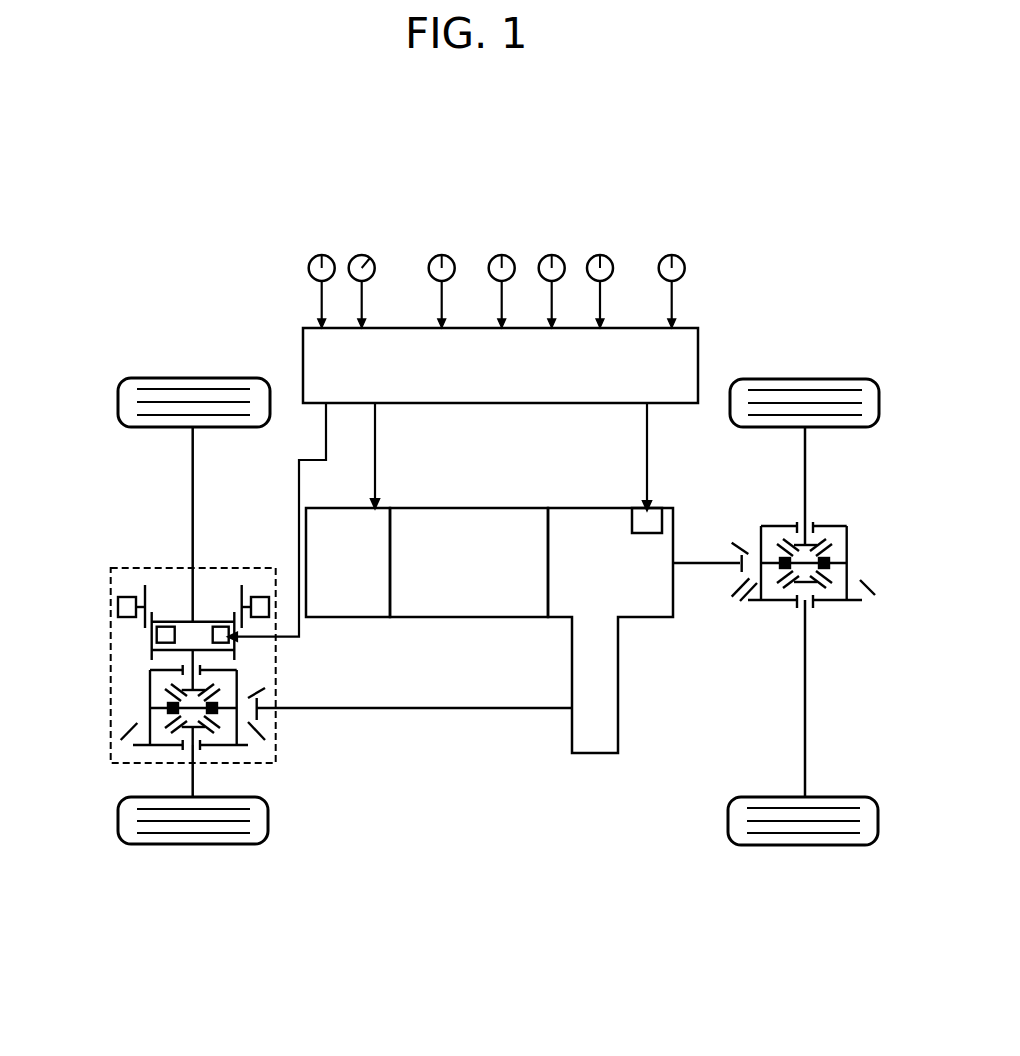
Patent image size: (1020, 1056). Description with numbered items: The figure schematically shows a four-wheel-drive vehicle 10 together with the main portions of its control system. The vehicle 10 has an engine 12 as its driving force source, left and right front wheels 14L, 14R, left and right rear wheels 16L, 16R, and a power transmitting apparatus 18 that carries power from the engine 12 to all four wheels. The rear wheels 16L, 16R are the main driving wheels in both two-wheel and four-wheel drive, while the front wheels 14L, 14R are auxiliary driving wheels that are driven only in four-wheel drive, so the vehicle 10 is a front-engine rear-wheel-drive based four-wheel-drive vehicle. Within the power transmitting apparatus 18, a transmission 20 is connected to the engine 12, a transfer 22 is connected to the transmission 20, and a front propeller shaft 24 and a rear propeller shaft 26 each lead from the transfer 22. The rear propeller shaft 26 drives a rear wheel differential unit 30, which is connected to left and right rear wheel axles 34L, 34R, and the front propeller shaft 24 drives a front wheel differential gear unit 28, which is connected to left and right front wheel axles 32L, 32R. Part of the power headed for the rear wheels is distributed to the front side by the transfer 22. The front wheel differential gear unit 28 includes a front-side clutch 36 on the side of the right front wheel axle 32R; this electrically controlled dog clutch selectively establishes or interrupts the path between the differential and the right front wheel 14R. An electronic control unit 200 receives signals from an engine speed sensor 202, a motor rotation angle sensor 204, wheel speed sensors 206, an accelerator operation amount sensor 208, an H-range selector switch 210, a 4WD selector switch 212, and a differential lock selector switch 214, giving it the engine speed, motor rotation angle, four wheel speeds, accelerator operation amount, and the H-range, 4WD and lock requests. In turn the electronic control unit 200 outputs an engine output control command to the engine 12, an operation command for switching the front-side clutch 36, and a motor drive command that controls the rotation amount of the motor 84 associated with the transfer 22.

The four-wheel-drive vehicle 10 is at (760, 172).
The engine 12 is at (352, 518).
The right front wheel 14R is at (164, 387).
The left front wheel 14L is at (163, 838).
The right rear wheel 16R is at (788, 387).
The left rear wheel 16L is at (787, 838).
The power transmitting apparatus 18 is at (498, 661).
The transmission 20 is at (472, 518).
The transfer 22 is at (600, 518).
The front propeller shaft 24 is at (398, 710).
The rear propeller shaft 26 is at (700, 555).
The front wheel differential gear unit 28 is at (159, 688).
The rear wheel differential unit 30 is at (841, 613).
The right front wheel axle 32R is at (193, 485).
The left front wheel axle 32L is at (193, 780).
The right rear wheel axle 34R is at (805, 473).
The left rear wheel axle 34L is at (805, 745).
The front-side clutch 36 is at (132, 634).
The motor 84 is at (667, 510).
The electronic control unit 200 is at (487, 403).
The engine speed sensor 202 is at (320, 255).
The motor rotation angle sensor 204 is at (370, 255).
The wheel speed sensors 206 is at (441, 255).
The accelerator operation amount sensor 208 is at (501, 255).
The H-range selector switch 210 is at (551, 255).
The 4WD selector switch 212 is at (599, 255).
The differential lock selector switch 214 is at (671, 255).